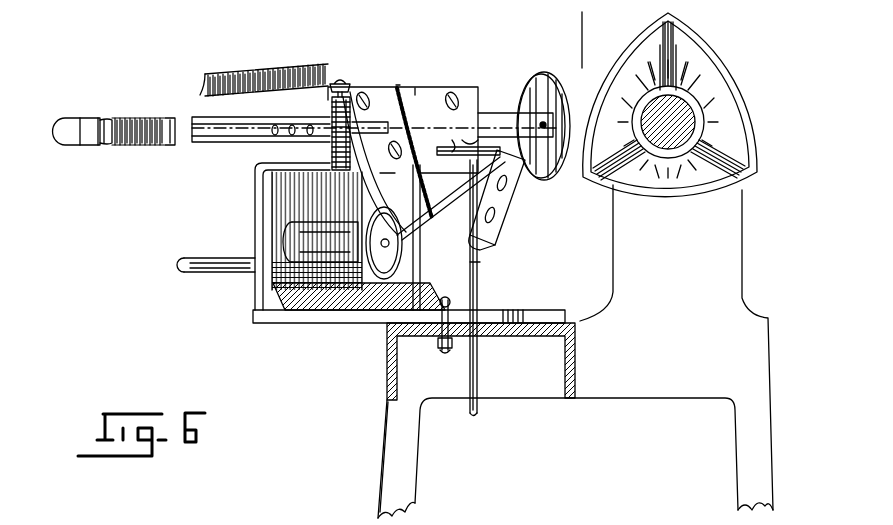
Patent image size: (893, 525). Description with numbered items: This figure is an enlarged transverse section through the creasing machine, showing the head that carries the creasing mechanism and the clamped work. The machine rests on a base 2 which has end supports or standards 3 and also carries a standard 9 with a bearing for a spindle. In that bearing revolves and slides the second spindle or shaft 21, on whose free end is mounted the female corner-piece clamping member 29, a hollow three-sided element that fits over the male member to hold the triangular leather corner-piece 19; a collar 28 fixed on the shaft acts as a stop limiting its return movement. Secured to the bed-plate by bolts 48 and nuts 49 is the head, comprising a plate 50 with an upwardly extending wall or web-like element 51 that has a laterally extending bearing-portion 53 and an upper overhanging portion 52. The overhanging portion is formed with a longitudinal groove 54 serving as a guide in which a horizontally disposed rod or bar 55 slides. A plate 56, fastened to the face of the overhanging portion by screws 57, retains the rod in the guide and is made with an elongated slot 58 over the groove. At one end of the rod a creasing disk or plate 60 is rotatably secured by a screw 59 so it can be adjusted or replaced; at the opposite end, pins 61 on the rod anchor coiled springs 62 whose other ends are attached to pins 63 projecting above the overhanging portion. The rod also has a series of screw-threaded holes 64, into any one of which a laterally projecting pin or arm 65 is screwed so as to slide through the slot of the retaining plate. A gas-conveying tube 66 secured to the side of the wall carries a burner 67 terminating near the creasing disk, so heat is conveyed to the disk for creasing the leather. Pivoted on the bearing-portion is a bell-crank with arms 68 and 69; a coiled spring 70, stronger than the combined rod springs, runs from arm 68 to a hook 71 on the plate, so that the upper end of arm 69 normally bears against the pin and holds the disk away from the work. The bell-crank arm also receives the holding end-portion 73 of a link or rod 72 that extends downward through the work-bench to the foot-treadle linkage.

The base 2 is at (518, 333).
The support or standard 3 is at (385, 450).
The support or standard 9 is at (63, 188).
The triangular leather corner-piece 19 is at (703, 33).
The second spindle or shaft 21 is at (680, 127).
The collar 28 is at (702, 100).
The female corner-piece clamping member 29 is at (737, 122).
The bolt 48 is at (445, 300).
The nut 49 is at (463, 343).
The plate 50 is at (360, 323).
The wall or web-like element 51 is at (262, 201).
The overhanging portion 52 is at (262, 101).
The bearing-portion or member 53 is at (275, 290).
The groove 54 is at (316, 129).
The rod or bar 55 is at (80, 124).
The plate 56 is at (438, 92).
The screw 57 is at (364, 92).
The slot or elongated opening 58 is at (399, 86).
The screw 59 is at (547, 124).
The creasing disk or plate 60 is at (540, 74).
The screw or pin 61 is at (92, 140).
The coiled spring 62 is at (150, 142).
The screw or pin 63 is at (340, 82).
The screw-threaded hole 64 is at (308, 138).
The laterally projecting pin or arm 65 is at (290, 159).
The gas-conveying tube 66 is at (216, 275).
The burner 67 is at (518, 192).
The arm of bell-crank 68 is at (414, 243).
The arm of bell-crank 69 is at (362, 180).
The coiled spring 70 is at (457, 140).
The hook 71 is at (417, 95).
The link or rod 72 is at (483, 288).
The holding end-portion 73 is at (483, 147).